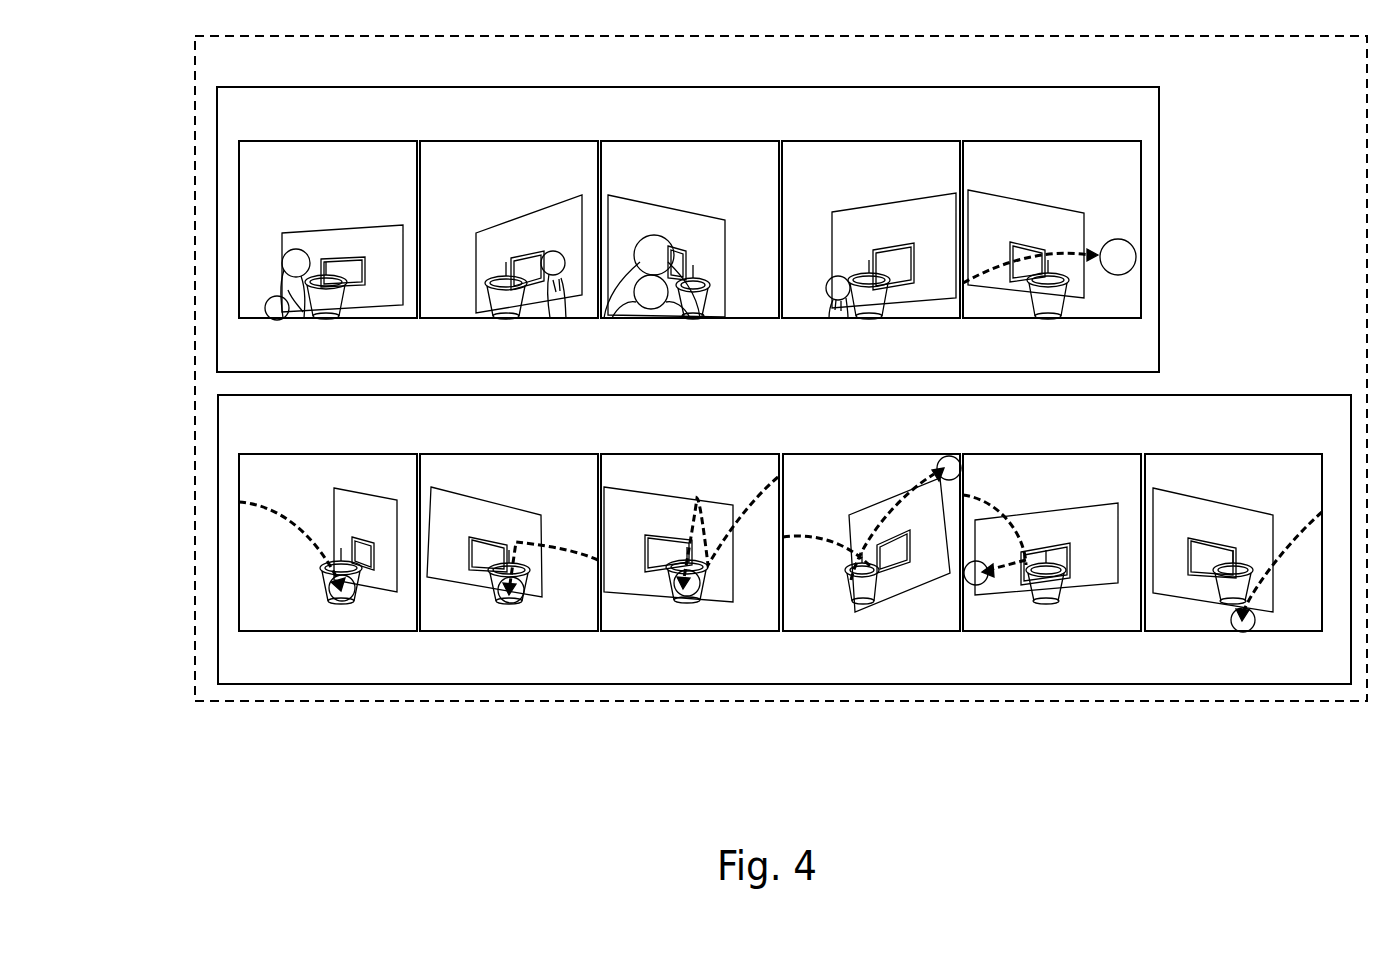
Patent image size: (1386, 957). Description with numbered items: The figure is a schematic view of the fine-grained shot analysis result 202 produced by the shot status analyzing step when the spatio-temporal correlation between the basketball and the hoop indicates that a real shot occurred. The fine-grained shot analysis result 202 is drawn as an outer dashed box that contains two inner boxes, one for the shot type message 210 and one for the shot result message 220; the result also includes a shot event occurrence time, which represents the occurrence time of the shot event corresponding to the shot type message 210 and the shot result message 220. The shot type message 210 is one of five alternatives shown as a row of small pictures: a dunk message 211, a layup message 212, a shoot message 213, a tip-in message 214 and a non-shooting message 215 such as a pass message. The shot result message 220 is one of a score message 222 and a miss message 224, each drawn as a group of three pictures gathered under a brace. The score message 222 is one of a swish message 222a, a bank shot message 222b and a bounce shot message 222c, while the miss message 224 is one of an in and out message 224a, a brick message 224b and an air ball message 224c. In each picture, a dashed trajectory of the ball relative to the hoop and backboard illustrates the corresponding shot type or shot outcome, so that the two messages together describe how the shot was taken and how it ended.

The fine-grained shot analysis result 202 is at (195, 100).
The shot type message 210 is at (217, 230).
The dunk message 211 is at (254, 319).
The layup message 212 is at (436, 319).
The shoot message 213 is at (616, 319).
The tip-in message 214 is at (797, 319).
The non-shooting message 215 is at (978, 319).
The shot result message 220 is at (218, 535).
The score message 222 is at (509, 630).
The swish message 222a is at (327, 631).
The bank shot message 222b is at (508, 631).
The bounce shot message 222c is at (690, 609).
The miss message 224 is at (1052, 630).
The in and out message 224a is at (870, 631).
The brick message 224b is at (1050, 631).
The air ball message 224c is at (1233, 609).